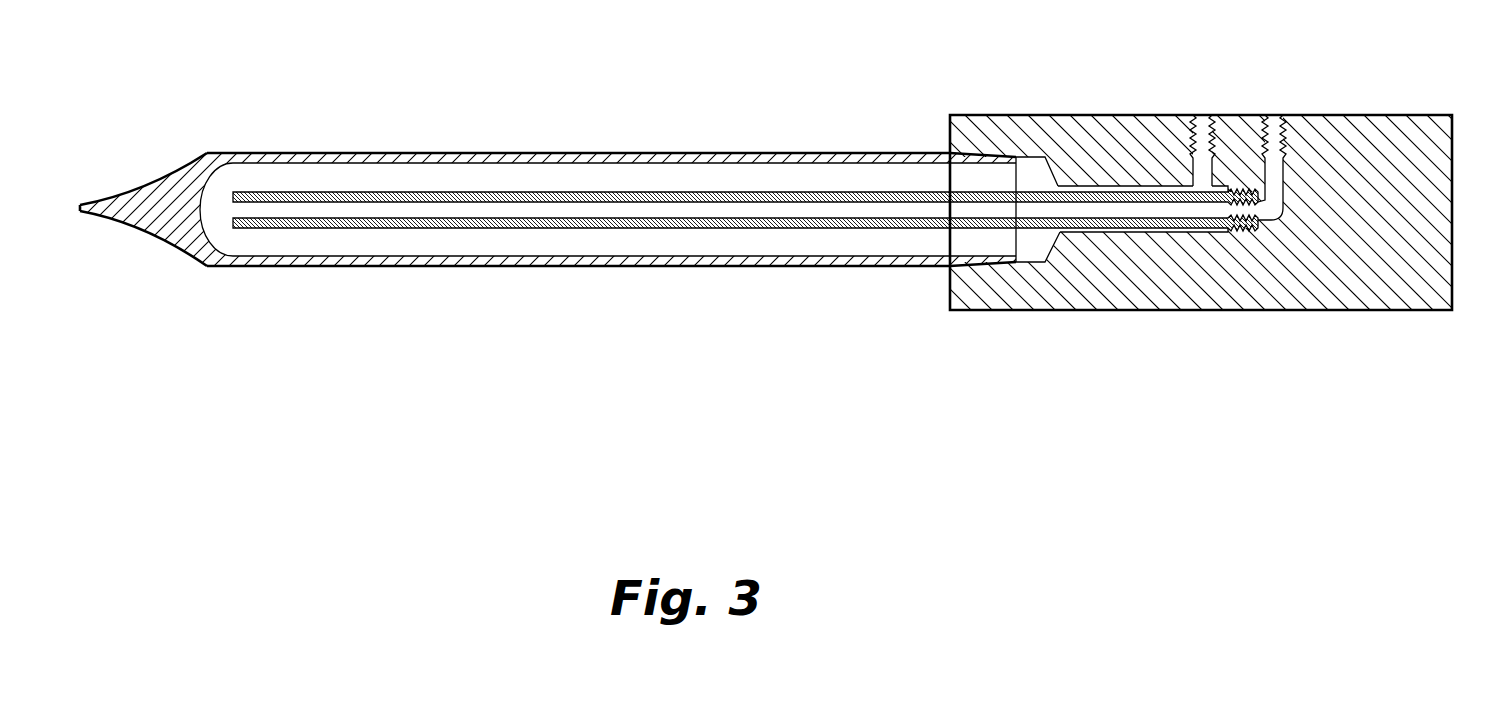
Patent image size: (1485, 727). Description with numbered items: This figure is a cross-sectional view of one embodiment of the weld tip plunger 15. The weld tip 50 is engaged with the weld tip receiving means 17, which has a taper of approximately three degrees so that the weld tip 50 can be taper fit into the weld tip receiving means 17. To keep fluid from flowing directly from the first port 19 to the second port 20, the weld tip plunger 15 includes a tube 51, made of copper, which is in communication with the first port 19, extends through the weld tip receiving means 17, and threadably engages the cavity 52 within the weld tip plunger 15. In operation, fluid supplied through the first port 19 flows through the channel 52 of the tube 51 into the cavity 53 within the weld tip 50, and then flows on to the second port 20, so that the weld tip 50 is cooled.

The weld tip plunger 15 is at (1080, 138).
The weld tip receiving means 17 is at (988, 152).
The first port 19 is at (1273, 125).
The second port 20 is at (1203, 125).
The weld tip 50 is at (293, 152).
The tube 51 is at (485, 227).
The channel 52 is at (403, 200).
The cavity 53 is at (542, 177).